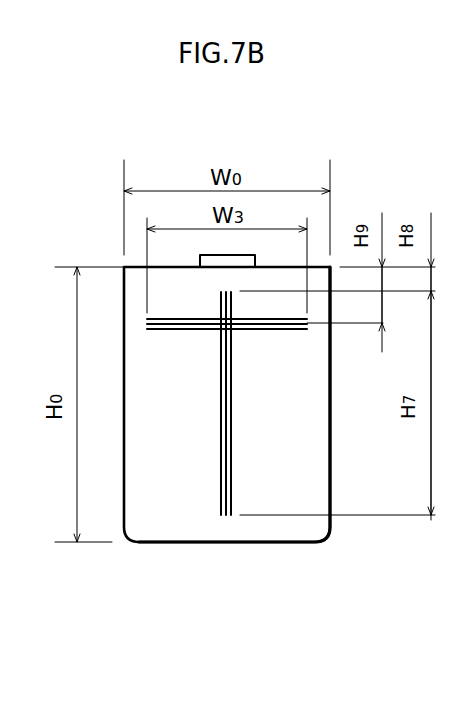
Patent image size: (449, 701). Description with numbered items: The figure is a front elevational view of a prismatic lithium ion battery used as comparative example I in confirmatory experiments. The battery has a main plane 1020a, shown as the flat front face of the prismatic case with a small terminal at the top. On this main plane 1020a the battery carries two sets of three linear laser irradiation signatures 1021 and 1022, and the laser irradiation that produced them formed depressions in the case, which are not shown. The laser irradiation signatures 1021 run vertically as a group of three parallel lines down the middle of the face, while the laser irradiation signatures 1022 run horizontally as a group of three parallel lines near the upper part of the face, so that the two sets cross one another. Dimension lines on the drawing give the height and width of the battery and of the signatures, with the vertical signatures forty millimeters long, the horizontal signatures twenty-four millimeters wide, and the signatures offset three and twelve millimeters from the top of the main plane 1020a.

The main plane 1020a is at (125, 282).
The linear laser irradiation signatures 1022 is at (172, 332).
The linear laser irradiation signatures 1021 is at (213, 498).